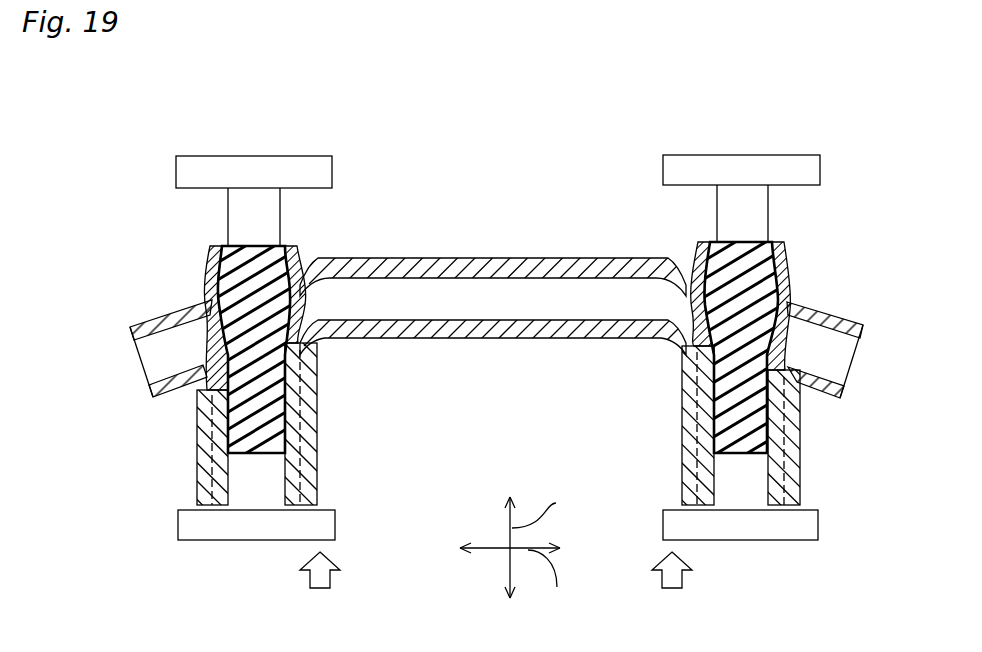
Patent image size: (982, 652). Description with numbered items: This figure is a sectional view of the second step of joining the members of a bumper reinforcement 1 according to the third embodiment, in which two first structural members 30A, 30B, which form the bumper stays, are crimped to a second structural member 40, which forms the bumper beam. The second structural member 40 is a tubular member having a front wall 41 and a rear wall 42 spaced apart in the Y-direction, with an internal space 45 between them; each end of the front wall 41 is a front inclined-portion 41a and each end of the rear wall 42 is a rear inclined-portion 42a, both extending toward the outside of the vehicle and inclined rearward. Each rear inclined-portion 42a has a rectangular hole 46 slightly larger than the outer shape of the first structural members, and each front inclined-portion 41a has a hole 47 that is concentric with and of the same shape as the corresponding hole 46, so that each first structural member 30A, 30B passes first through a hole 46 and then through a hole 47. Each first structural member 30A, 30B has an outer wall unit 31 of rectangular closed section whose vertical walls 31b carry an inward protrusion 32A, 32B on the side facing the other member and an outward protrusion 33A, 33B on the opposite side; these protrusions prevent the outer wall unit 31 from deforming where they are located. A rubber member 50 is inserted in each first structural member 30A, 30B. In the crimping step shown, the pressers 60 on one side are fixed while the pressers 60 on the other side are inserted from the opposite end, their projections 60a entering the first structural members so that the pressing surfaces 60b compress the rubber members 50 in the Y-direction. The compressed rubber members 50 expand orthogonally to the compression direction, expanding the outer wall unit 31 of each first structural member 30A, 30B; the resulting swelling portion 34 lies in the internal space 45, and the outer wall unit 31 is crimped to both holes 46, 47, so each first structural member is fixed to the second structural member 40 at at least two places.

The bumper reinforcement 1 is at (168, 201).
The first structural member 30A is at (196, 440).
The first structural member 30B is at (684, 447).
The outer wall unit 31 is at (290, 510).
The vertical wall 31b is at (214, 503).
The inward protrusion 32A is at (317, 390).
The inward protrusion 32B is at (682, 398).
The outward protrusion 33A is at (203, 466).
The outward protrusion 33B is at (800, 466).
The swelling portion 34 is at (298, 250).
The second structural member 40 is at (481, 289).
The front wall 41 is at (533, 268).
The front inclined-portion 41a is at (132, 326).
The rear wall 42 is at (520, 333).
The rear inclined-portion 42a is at (152, 395).
The space 45 is at (474, 300).
The hole 46 is at (207, 397).
The hole 47 is at (212, 282).
The rubber member 50 is at (290, 455).
The presser 60 is at (316, 155).
The projection 60a is at (240, 500).
The pressing surface 60b is at (288, 418).